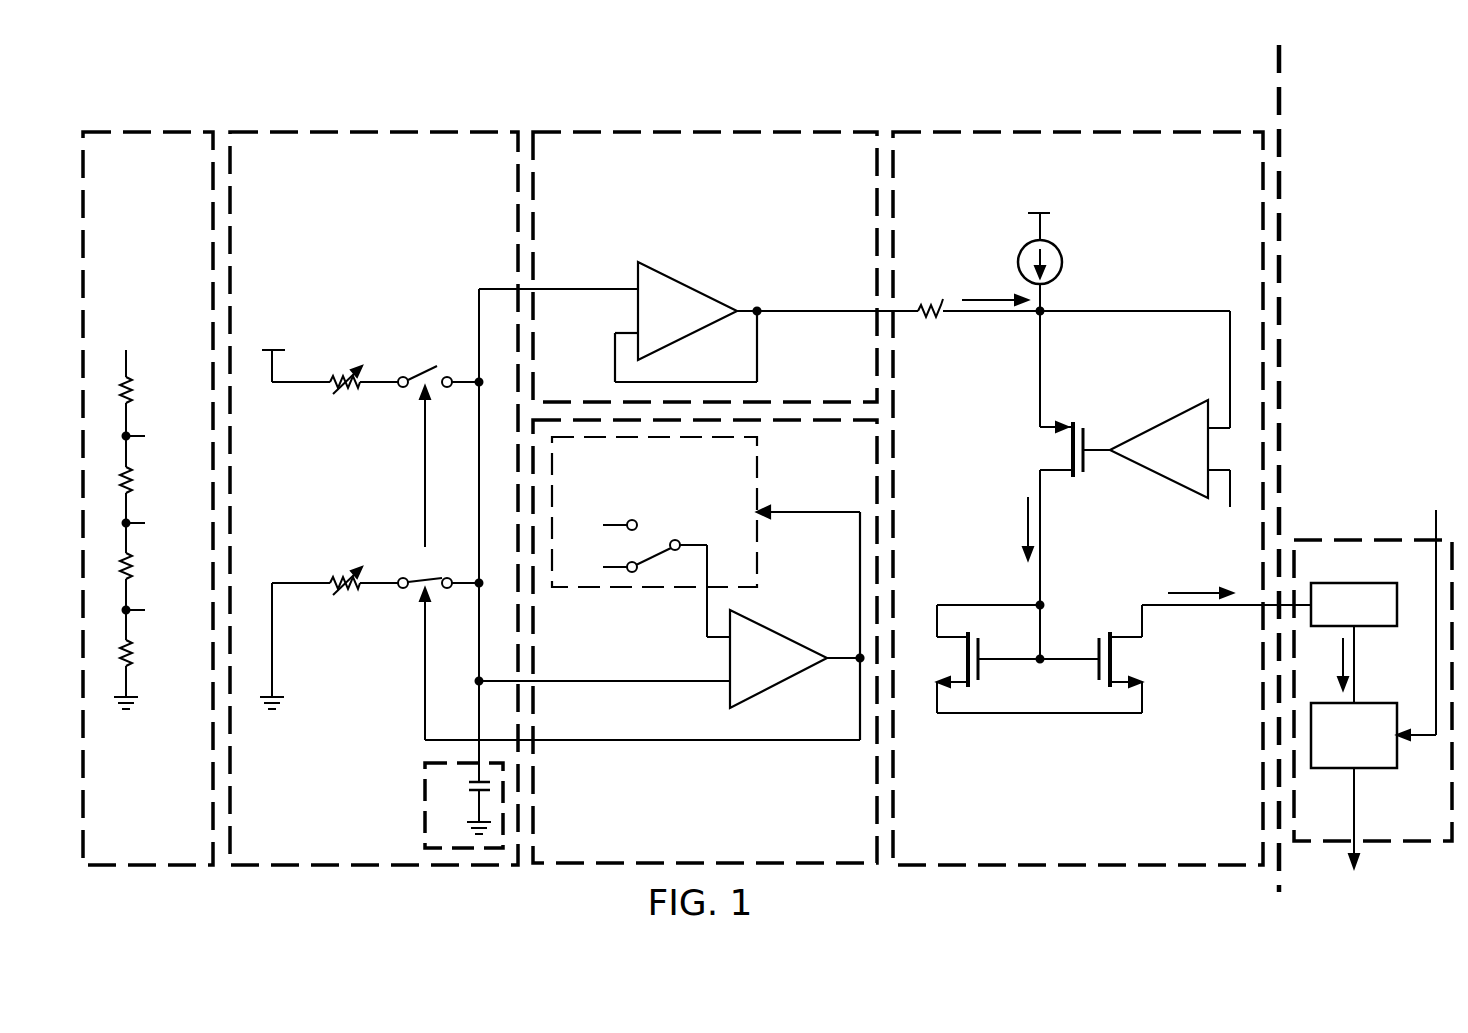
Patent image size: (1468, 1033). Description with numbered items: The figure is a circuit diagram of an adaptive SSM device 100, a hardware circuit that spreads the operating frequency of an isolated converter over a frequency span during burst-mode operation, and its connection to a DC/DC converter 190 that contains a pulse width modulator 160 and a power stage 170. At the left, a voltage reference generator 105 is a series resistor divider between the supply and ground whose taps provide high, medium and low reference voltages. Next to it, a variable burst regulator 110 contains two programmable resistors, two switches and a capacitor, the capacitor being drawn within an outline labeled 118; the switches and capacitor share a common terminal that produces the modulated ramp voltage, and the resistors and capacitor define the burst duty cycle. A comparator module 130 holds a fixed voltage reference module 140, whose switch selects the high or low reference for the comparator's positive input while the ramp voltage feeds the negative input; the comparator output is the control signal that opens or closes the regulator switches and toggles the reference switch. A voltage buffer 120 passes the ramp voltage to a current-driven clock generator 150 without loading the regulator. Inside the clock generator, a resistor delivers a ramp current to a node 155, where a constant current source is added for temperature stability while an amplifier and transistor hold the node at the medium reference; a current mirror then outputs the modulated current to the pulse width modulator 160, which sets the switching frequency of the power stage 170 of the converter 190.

The adaptive SSM device 100 is at (447, 70).
The voltage reference generator 105 is at (131, 126).
The variable burst regulator 110 is at (327, 126).
The capacitor C0 module 118 is at (425, 818).
The voltage buffer 120 is at (636, 126).
The comparator module 130 is at (689, 843).
The fixed voltage reference module 140 is at (757, 472).
The current-driven clock generator 150 is at (1133, 126).
The node 155 is at (1038, 315).
The pulse width modulator 160 is at (1375, 628).
The power stage 170 is at (1375, 770).
The DC/DC converter 190 is at (1341, 533).